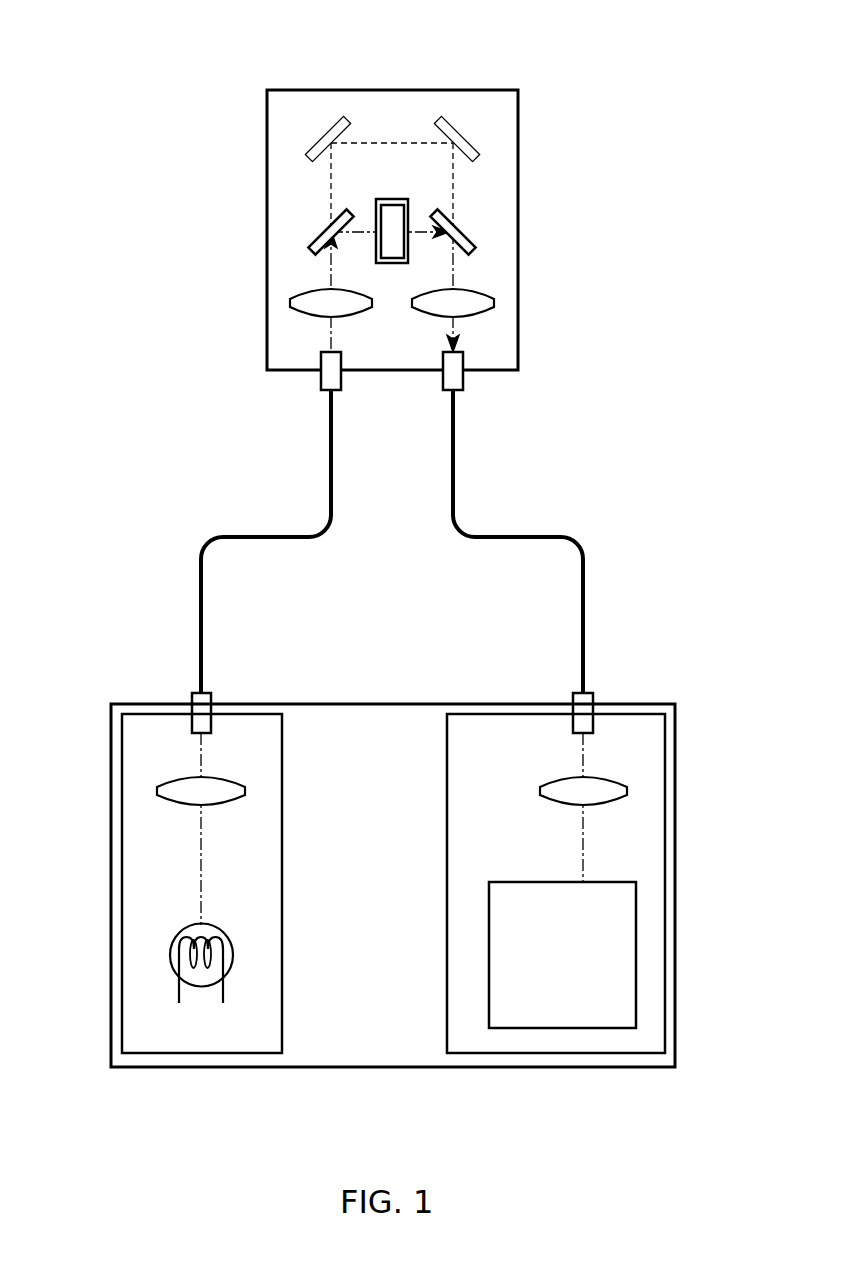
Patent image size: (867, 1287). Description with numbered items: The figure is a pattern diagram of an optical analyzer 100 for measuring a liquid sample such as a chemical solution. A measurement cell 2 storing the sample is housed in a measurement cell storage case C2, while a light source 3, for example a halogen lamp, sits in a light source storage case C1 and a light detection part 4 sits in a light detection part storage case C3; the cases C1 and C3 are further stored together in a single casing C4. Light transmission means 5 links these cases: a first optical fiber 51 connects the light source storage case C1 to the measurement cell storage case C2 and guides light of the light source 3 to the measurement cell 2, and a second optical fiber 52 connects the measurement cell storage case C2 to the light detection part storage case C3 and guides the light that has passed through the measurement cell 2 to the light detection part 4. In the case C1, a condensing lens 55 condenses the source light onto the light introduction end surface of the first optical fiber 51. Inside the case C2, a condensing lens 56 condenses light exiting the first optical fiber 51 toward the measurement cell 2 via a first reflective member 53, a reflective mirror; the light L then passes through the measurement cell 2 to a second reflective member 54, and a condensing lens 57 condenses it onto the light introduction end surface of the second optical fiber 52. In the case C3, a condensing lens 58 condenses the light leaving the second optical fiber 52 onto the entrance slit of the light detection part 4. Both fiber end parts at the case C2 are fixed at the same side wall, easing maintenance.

The optical analyzer 100 is at (118, 140).
The measurement cell storage case C2 is at (315, 90).
The light source storage case C1 is at (168, 1057).
The light detection part storage case C3 is at (493, 1057).
The casing C4 is at (352, 1070).
The light beam L is at (457, 268).
The measurement cell 2 is at (392, 197).
The light source 3 is at (218, 925).
The light detection part 4 is at (513, 880).
The light transmission means 5 is at (240, 417).
The first optical fiber 51 is at (328, 478).
The second optical fiber 52 is at (458, 478).
The first reflective member 53 is at (325, 222).
The second reflective member 54 is at (460, 222).
The condensing lens 55 is at (172, 803).
The condensing lens 56 is at (290, 303).
The condensing lens 57 is at (494, 303).
The condensing lens 58 is at (553, 780).